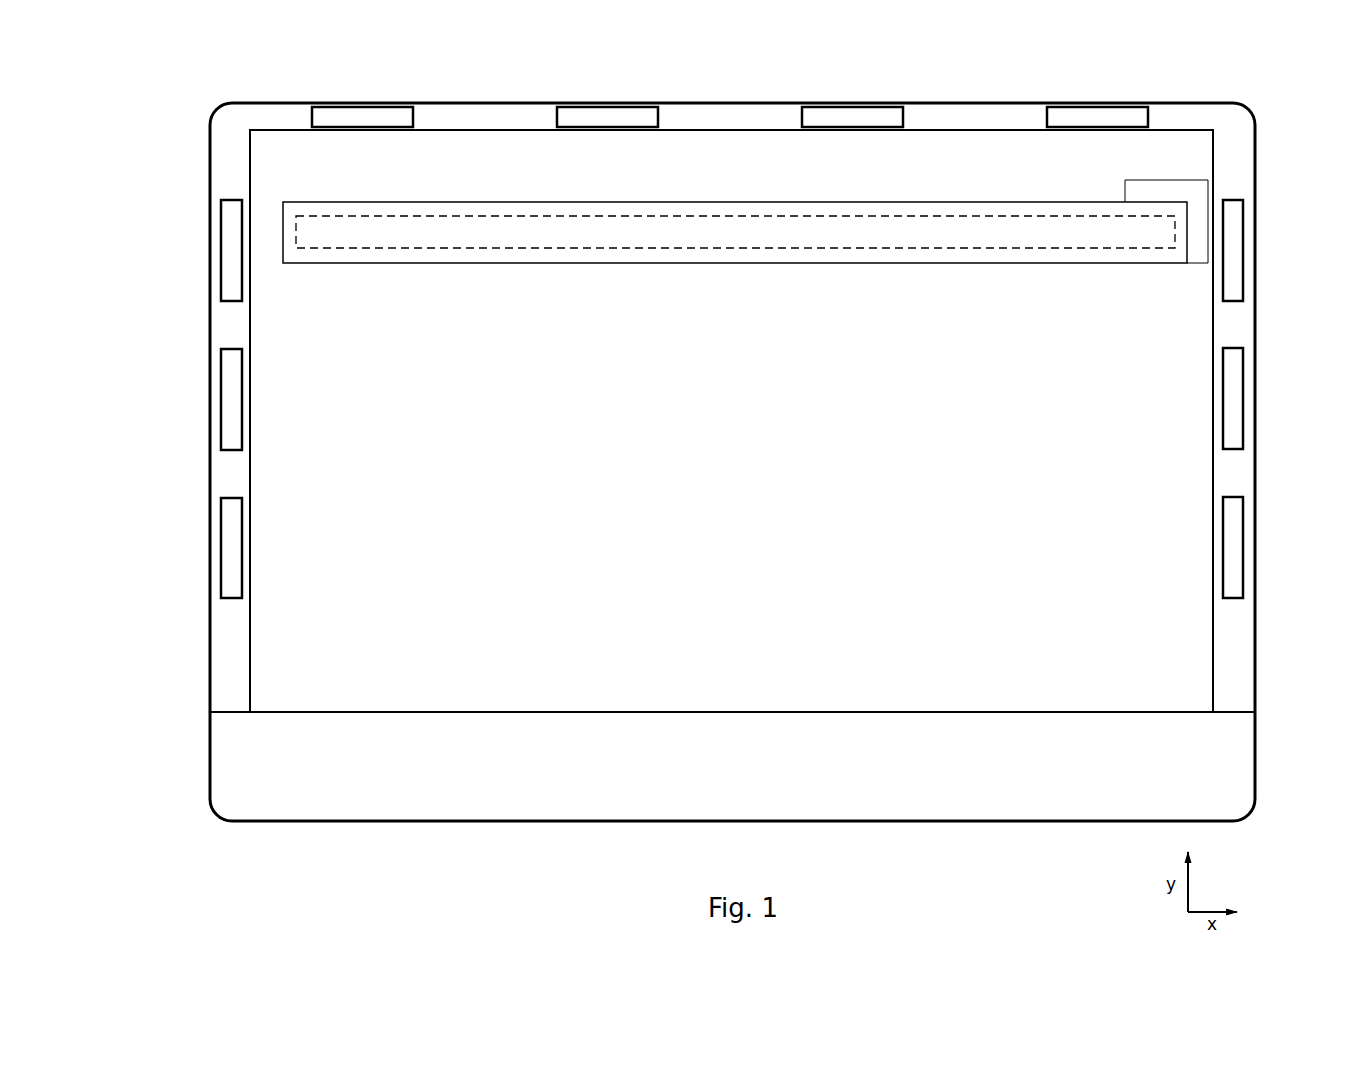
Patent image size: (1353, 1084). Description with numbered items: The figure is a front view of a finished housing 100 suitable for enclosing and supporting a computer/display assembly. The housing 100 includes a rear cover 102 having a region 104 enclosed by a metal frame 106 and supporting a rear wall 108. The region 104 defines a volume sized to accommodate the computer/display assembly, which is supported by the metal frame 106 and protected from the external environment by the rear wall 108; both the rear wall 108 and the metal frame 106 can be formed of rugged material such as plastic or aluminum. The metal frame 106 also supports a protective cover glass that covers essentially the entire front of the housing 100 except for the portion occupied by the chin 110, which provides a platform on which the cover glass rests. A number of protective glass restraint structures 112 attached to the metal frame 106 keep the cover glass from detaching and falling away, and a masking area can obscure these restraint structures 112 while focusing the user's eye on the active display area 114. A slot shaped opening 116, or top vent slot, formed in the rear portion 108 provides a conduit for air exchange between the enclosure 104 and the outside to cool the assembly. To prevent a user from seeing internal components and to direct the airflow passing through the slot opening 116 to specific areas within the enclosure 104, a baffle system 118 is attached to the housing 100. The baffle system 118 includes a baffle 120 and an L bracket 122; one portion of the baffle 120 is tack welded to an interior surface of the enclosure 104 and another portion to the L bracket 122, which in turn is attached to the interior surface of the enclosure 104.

The finished housing 100 is at (176, 825).
The rear cover 102 is at (1265, 482).
The region 104 is at (731, 421).
The metal frame 106 is at (733, 384).
The rear wall 108 is at (442, 320).
The chin 110 is at (732, 741).
The protective glass restraint structures 112 is at (220, 520).
The active display area 114 is at (729, 464).
The slot shaped opening 116 is at (735, 232).
The baffle system 118 is at (770, 290).
The baffle 120 is at (860, 263).
The L bracket 122 is at (1125, 185).